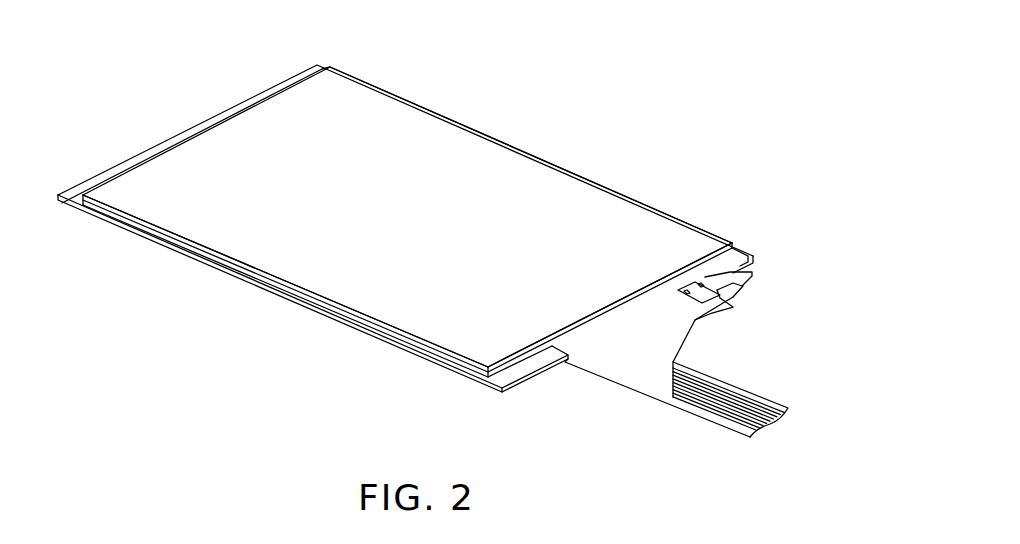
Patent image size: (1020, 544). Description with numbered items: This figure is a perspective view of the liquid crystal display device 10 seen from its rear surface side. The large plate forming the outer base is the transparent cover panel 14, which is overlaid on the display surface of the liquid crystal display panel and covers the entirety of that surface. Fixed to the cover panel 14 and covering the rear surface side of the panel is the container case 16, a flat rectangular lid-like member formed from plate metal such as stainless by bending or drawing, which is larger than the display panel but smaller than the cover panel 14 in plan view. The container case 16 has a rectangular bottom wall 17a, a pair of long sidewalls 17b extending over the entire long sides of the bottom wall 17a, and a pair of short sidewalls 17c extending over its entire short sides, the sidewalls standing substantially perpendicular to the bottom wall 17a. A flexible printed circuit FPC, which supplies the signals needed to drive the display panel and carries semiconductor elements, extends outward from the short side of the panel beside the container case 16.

The liquid crystal display device 10 is at (443, 98).
The transparent cover panel 14 is at (248, 103).
The container case 16 is at (567, 187).
The bottom wall 17a is at (477, 153).
The long sidewalls 17b is at (312, 293).
The short sidewalls 17c is at (513, 358).
The flexible printed circuit FPC is at (622, 363).